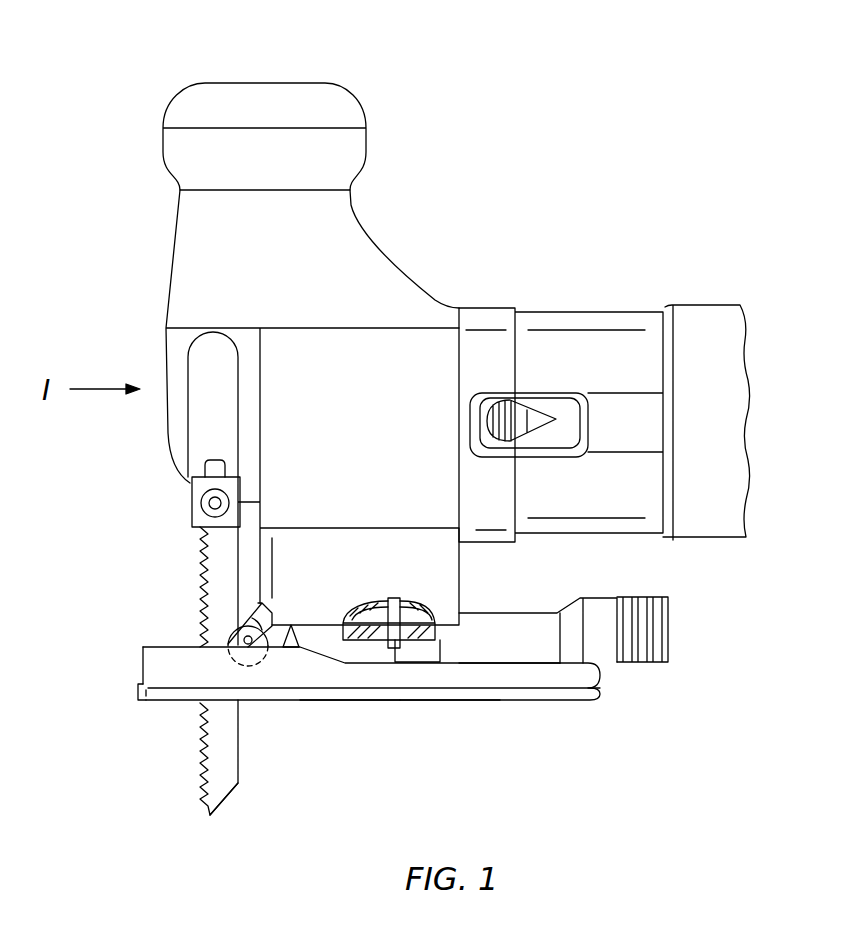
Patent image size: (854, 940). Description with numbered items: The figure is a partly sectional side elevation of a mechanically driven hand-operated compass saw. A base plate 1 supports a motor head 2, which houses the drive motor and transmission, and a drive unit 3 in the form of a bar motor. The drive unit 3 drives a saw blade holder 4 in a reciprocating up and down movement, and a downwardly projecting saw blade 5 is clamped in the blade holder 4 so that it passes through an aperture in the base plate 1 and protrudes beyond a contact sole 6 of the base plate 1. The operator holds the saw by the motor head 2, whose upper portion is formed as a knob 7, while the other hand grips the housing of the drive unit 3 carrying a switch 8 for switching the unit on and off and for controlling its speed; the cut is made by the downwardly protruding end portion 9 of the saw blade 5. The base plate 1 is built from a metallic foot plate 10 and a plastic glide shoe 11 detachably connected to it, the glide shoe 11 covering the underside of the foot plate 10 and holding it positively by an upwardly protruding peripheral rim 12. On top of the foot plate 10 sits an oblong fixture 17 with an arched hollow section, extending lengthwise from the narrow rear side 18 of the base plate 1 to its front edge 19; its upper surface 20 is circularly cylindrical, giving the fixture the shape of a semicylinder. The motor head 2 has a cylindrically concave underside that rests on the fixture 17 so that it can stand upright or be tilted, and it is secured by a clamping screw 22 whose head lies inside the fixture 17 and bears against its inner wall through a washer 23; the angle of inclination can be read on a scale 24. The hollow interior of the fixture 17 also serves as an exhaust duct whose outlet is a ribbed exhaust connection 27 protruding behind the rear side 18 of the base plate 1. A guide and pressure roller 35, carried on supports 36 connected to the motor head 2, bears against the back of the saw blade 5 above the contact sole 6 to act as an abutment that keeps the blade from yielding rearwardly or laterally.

The base plate 1 is at (134, 652).
The motor head 2 is at (408, 248).
The drive unit 3 is at (700, 340).
The saw blade holder 4 is at (196, 500).
The saw blade 5 is at (197, 545).
The contact sole 6 is at (403, 712).
The knob 7 is at (268, 105).
The switch 8 is at (573, 413).
The end portion 9 is at (215, 787).
The foot plate 10 is at (168, 675).
The glide shoe 11 is at (185, 695).
The peripheral rim 12 is at (140, 700).
The fixture 17 is at (492, 648).
The rear side 18 is at (610, 694).
The front edge 19 is at (293, 632).
The upper surface 20 is at (529, 604).
The clamping screw 22 is at (390, 606).
The washer 23 is at (375, 642).
The scale 24 is at (422, 654).
The exhaust connection 27 is at (656, 628).
The guide and pressure roller 35 is at (230, 630).
The supports 36 is at (258, 605).